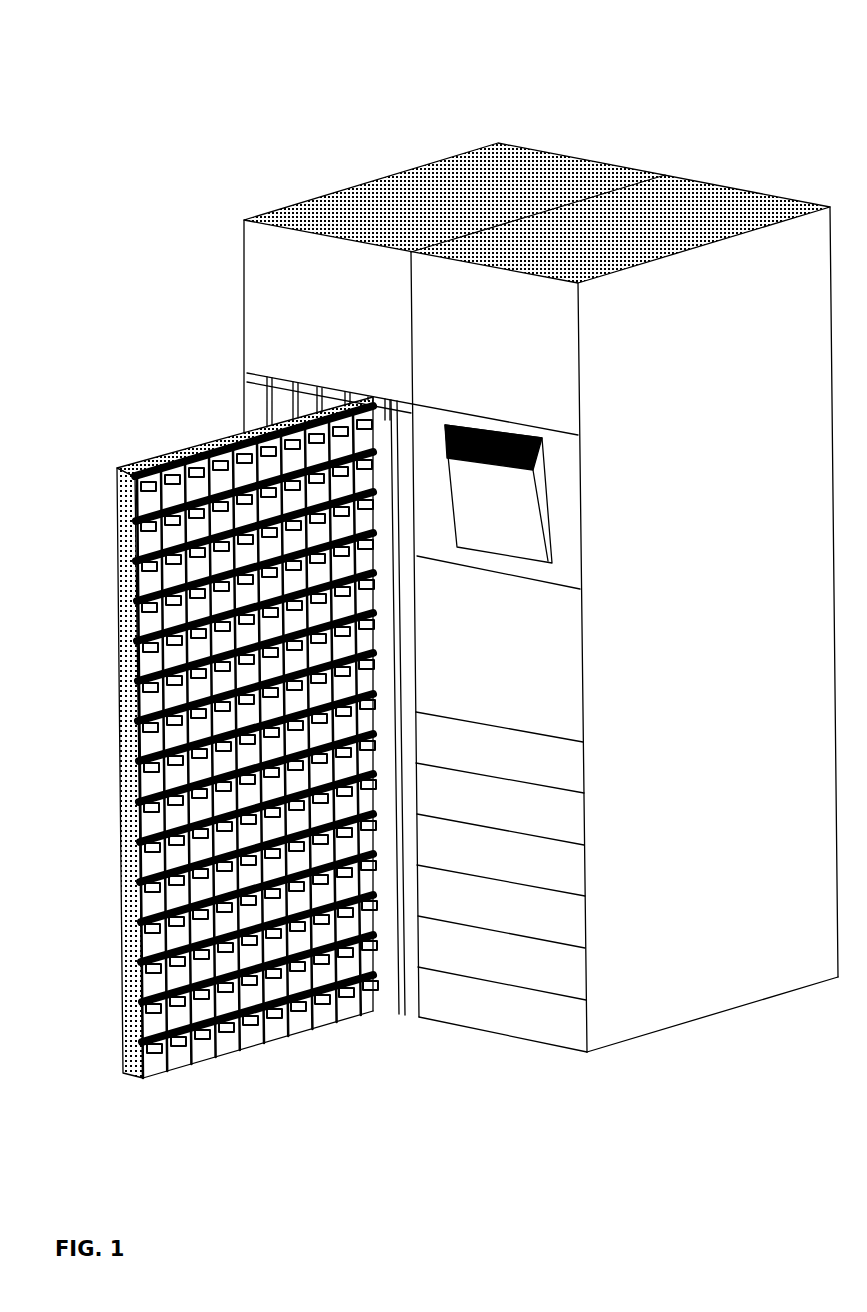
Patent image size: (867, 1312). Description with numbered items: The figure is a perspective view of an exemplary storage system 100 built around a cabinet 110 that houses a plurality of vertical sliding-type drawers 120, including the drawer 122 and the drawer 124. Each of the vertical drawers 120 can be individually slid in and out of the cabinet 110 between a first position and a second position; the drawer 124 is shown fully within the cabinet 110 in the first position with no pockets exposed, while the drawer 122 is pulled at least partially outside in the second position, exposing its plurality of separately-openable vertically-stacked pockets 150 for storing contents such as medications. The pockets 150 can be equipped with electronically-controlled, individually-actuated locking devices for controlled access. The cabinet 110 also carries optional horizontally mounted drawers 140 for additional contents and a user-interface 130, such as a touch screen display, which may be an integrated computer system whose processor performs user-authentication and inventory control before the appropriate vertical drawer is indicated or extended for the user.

The storage system 100 is at (187, 86).
The cabinet 110 is at (430, 188).
The vertical sliding-type drawers 120 is at (417, 383).
The drawer 122 is at (160, 455).
The drawer 124 is at (402, 429).
The user-interface 130 is at (527, 515).
The horizontally mounted drawers 140 is at (602, 743).
The separately-openable vertically-stacked pockets 150 is at (270, 648).